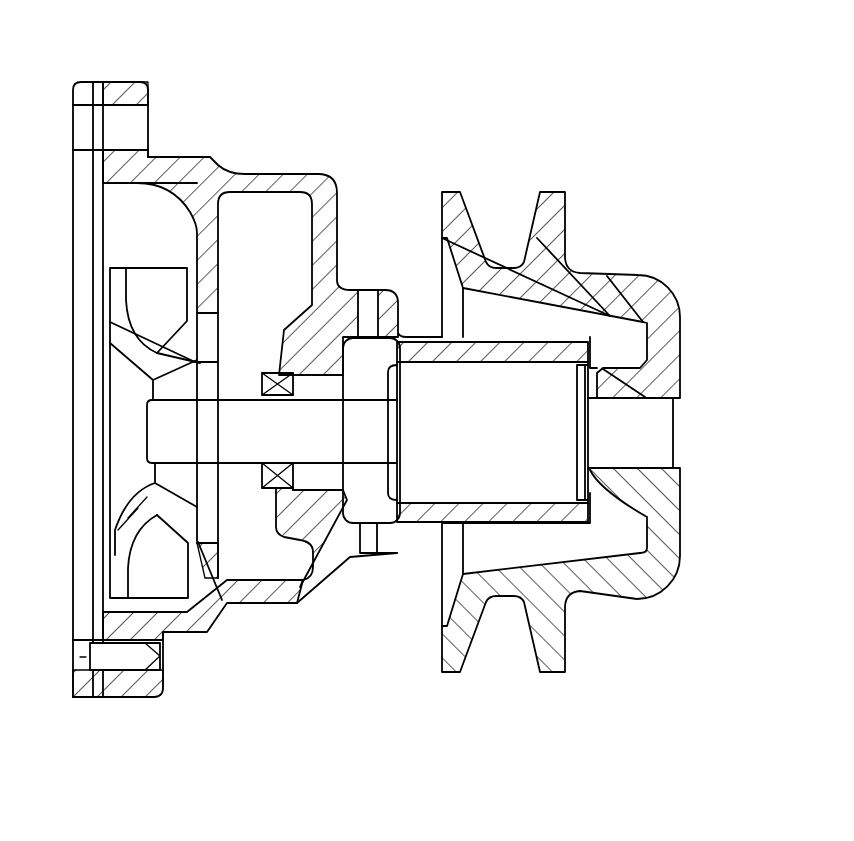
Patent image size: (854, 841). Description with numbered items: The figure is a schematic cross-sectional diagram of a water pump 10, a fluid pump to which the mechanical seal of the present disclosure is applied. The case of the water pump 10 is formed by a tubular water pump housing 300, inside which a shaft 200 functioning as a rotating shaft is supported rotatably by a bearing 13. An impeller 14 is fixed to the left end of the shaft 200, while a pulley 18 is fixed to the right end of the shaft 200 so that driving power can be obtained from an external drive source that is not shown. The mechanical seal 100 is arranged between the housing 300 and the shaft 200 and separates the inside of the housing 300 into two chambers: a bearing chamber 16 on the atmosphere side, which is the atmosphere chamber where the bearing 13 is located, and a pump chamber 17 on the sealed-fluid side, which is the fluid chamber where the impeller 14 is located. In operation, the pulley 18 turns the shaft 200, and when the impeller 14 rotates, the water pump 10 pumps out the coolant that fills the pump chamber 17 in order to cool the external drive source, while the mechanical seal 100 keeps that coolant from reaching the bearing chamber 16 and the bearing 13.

The water pump 10 is at (593, 90).
The bearing 13 is at (557, 423).
The impeller 14 is at (128, 352).
The bearing chamber 16 is at (370, 513).
The pump chamber 17 is at (252, 320).
The pulley 18 is at (641, 292).
The mechanical seal 100 is at (303, 517).
The shaft 200 is at (243, 448).
The water pump housing 300 is at (235, 175).